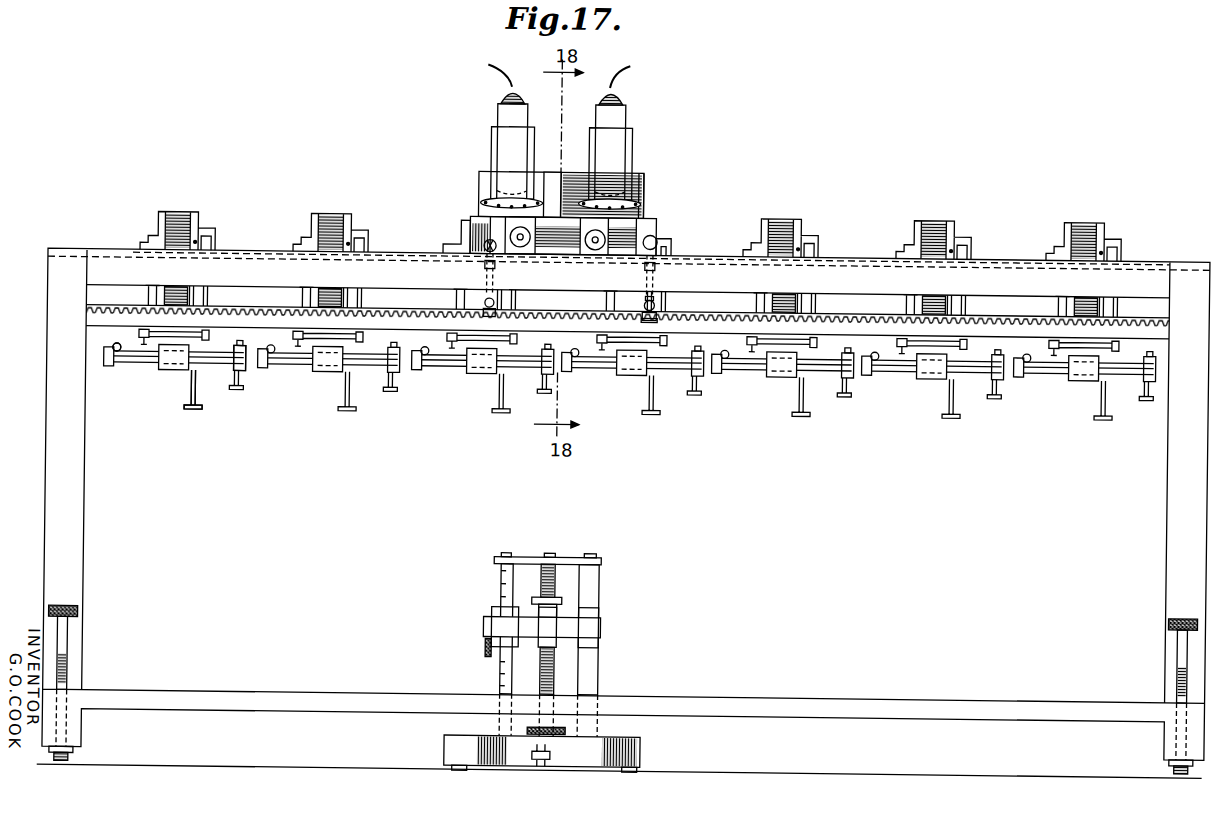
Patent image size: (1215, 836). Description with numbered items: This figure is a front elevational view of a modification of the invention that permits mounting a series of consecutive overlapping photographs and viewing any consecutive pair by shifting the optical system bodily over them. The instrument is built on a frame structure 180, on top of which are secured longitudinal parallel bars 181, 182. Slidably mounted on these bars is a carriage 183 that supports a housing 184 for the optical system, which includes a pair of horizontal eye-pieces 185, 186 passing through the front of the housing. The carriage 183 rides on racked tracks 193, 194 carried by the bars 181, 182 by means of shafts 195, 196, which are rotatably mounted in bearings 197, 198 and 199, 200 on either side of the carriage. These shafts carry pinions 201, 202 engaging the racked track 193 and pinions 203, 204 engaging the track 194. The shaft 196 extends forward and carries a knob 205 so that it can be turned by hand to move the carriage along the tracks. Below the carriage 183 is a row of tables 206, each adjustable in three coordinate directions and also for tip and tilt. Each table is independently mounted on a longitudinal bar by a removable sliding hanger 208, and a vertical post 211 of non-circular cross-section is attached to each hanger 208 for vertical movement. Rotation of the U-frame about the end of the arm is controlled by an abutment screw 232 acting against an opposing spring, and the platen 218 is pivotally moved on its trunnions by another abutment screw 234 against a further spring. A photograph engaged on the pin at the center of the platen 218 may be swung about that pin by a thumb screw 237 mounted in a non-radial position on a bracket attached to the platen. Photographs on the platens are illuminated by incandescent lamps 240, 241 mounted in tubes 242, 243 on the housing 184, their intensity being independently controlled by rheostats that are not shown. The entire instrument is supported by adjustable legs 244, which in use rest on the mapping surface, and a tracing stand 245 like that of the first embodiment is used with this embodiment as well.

The frame structure 180 is at (86, 530).
The longitudinal parallel bar 181 is at (258, 243).
The longitudinal parallel bar 182 is at (87, 322).
The carriage 183 is at (564, 180).
The housing 184 is at (640, 184).
The eye-piece 185 is at (523, 256).
The eye-piece 186 is at (558, 274).
The racked track 193 is at (1000, 312).
The racked track 194 is at (987, 263).
The shaft 195 is at (483, 276).
The shaft 196 is at (652, 287).
The bearing 197 is at (459, 248).
The bearing 198 is at (498, 304).
The bearing 199 is at (656, 272).
The bearing 200 is at (657, 304).
The pinion 201 is at (449, 309).
The pinion 202 is at (654, 320).
The pinion 203 is at (485, 240).
The pinion 204 is at (669, 250).
The knob 205 is at (652, 244).
The table 206 is at (460, 375).
The sliding hanger 208 is at (363, 236).
The vertical post 211 is at (333, 222).
The platen 218 is at (156, 369).
The abutment screw 232 is at (200, 405).
The abutment screw 234 is at (246, 380).
The thumb screw 237 is at (116, 360).
The incandescent lamp 240 is at (497, 150).
The incandescent lamp 241 is at (623, 153).
The tube 242 is at (477, 175).
The tube 243 is at (641, 195).
The adjustable leg 244 is at (76, 761).
The tracing stand 245 is at (528, 556).